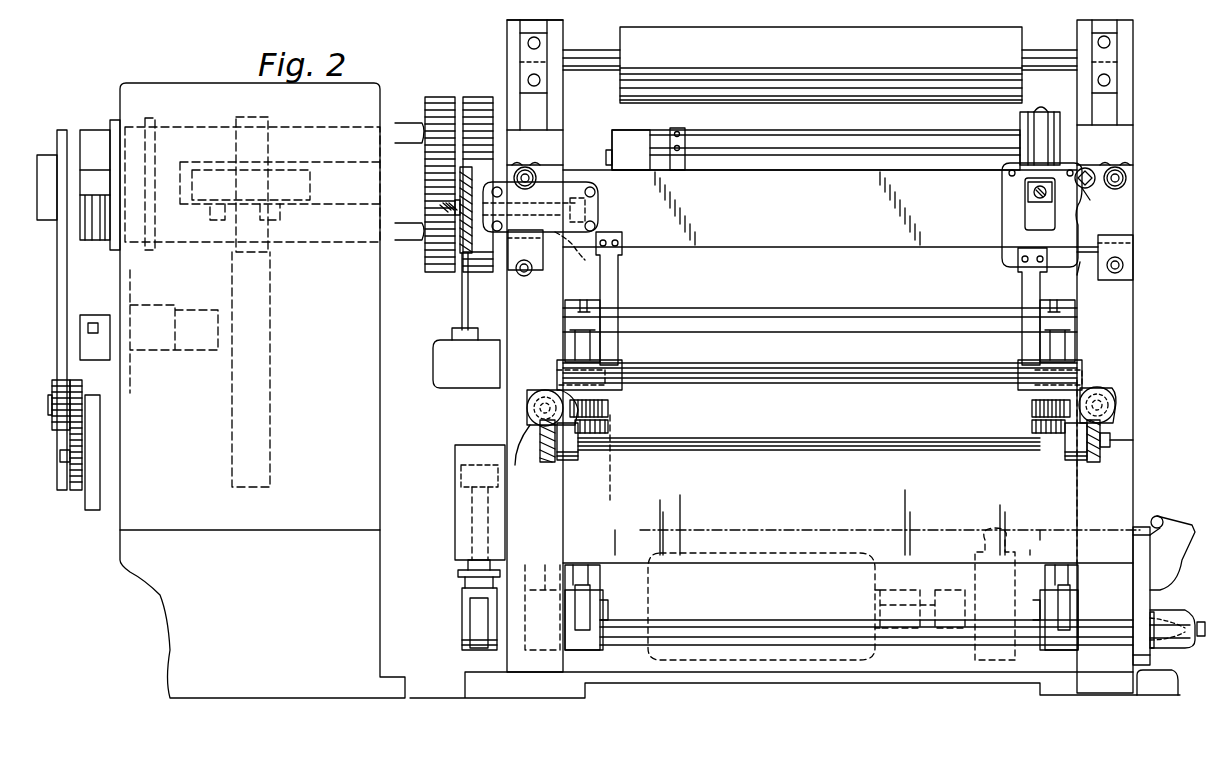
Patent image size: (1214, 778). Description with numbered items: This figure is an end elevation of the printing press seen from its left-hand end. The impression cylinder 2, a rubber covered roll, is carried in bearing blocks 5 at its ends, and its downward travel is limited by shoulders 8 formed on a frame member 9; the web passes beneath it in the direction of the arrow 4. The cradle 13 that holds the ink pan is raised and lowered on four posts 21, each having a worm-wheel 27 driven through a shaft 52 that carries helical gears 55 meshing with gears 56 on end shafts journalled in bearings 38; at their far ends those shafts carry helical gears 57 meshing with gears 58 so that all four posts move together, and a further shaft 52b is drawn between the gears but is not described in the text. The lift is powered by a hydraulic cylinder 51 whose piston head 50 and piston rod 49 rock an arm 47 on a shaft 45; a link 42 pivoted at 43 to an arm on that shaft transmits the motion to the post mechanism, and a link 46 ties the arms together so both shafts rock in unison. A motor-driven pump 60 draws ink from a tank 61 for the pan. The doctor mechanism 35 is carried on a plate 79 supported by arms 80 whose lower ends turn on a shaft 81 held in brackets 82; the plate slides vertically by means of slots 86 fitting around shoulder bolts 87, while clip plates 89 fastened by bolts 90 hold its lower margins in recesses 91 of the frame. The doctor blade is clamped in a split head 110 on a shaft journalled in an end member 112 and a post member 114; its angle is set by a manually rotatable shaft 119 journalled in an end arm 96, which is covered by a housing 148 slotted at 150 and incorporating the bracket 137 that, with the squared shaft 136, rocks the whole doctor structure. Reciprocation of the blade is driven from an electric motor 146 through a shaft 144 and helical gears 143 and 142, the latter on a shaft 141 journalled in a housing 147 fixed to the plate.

The impression cylinder 2 is at (632, 110).
The arrow 4 is at (690, 40).
The bearing blocks 5 is at (475, 398).
The shoulders 8 is at (1147, 135).
The frame member 9 is at (1038, 110).
The cradle 13 is at (836, 266).
The posts 21 is at (590, 345).
The worm-wheels 27 is at (610, 408).
The doctor mechanism 35 is at (807, 170).
The bearings 38 is at (568, 462).
The link 42 is at (582, 568).
The pivot connection 43 is at (608, 606).
The shaft 45 is at (698, 620).
The link 46 is at (545, 568).
The arm 47 is at (480, 610).
The piston rod 49 is at (460, 582).
The piston head 50 is at (461, 475).
The hydraulic cylinder 51 is at (455, 505).
The shaft 52 is at (535, 405).
The roller portion 52b is at (627, 450).
The helical gears 55 is at (522, 453).
The helical gears 56 is at (547, 462).
The helical gears 57 is at (1093, 462).
The helical gears 58 is at (1110, 410).
The motor-driven pump 60 is at (1000, 525).
The tank 61 is at (745, 668).
The plate 79 is at (780, 248).
The arms 80 is at (610, 278).
The shaft 81 is at (895, 350).
The brackets 82 is at (557, 368).
The slot 86 is at (1126, 172).
The bolt 87 is at (1124, 180).
The clip plates 89 is at (1133, 252).
The bolts 90 is at (1124, 266).
The recess 91 is at (1082, 275).
The end arm 96 is at (1052, 128).
The split head 110 is at (728, 140).
The end member 112 is at (612, 135).
The post member 114 is at (685, 126).
The manually rotatable shaft 119 is at (1034, 190).
The shaft 136 is at (1107, 201).
The bracket 137 is at (1088, 168).
The shaft 141 is at (576, 252).
The helical gear 142 is at (463, 255).
The helical gear 143 is at (440, 205).
The shaft 144 is at (462, 320).
The electric motor 146 is at (435, 383).
The housing 147 is at (598, 200).
The housing 148 is at (1002, 206).
The slot 150 is at (1025, 222).